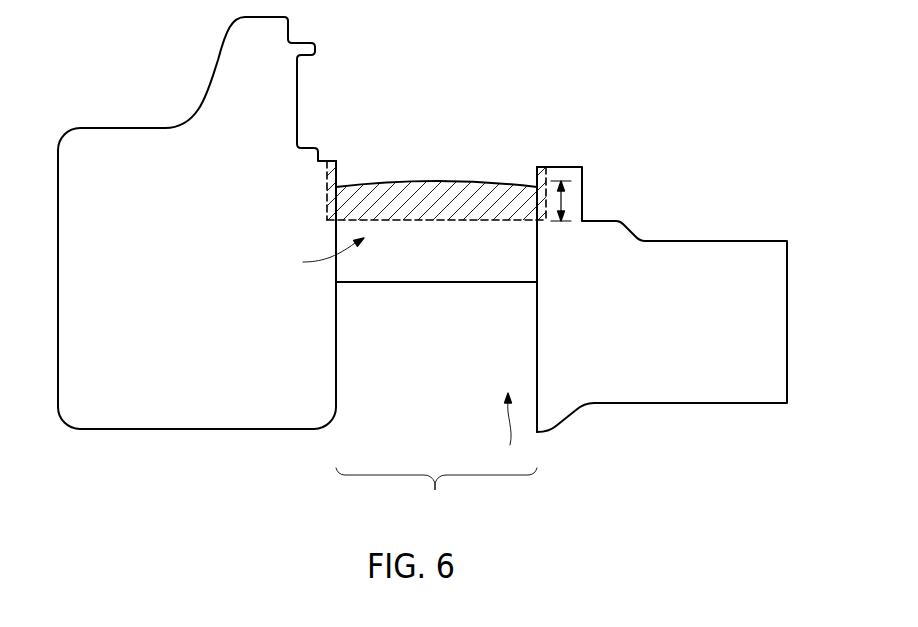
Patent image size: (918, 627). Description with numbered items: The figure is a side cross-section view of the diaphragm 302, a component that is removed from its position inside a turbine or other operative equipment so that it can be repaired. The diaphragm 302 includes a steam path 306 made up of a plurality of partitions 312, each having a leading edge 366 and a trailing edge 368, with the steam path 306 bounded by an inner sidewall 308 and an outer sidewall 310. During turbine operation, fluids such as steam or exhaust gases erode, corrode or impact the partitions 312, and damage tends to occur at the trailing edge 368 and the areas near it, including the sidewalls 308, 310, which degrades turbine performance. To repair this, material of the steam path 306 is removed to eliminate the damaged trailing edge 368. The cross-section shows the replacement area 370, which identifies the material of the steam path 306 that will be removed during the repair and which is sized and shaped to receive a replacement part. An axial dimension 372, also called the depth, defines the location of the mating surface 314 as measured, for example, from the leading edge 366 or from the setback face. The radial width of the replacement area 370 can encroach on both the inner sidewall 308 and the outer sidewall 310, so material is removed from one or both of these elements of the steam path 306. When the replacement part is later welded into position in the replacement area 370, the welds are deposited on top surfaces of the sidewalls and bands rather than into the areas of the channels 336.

The diaphragm 302 is at (721, 107).
The steam path 306 is at (436, 495).
The inner sidewall 308 is at (562, 167).
The outer sidewall 310 is at (326, 158).
The partitions 312 is at (385, 283).
The mating surface 314 is at (490, 221).
The channels 336 is at (507, 431).
The leading edge 366 is at (437, 283).
The trailing edge 368 is at (447, 178).
The replacement area 370 is at (316, 256).
The axial dimension 372 is at (565, 200).